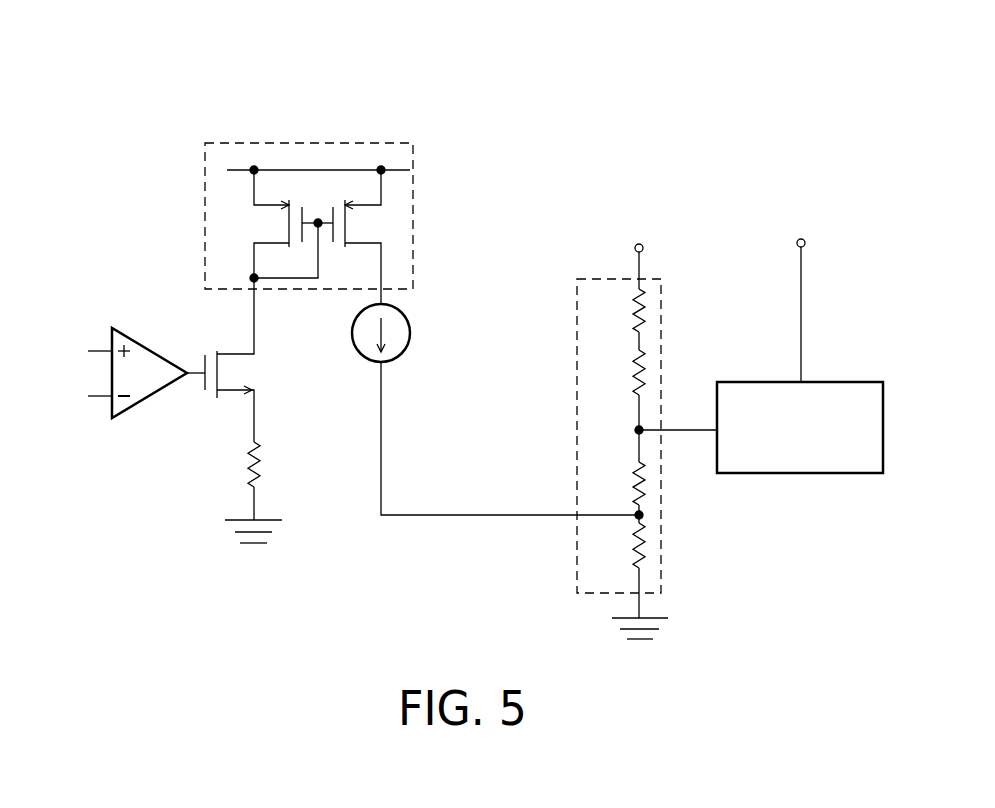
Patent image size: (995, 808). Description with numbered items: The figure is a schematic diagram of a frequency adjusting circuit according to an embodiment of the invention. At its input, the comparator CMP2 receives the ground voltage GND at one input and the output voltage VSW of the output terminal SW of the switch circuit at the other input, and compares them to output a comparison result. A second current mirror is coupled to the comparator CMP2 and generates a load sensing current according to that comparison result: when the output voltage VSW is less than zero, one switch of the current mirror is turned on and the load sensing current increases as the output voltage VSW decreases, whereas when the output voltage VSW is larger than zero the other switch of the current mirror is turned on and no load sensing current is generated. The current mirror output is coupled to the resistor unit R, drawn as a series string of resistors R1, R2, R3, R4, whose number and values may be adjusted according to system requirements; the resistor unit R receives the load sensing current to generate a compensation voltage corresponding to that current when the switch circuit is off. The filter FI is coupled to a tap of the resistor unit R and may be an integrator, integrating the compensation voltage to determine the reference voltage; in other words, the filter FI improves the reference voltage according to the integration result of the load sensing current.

The comparator CMP2 is at (160, 324).
The resistor unit R is at (643, 459).
The resistor R1 is at (618, 310).
The resistor R2 is at (618, 372).
The resistor R3 is at (618, 483).
The resistor R4 is at (618, 545).
The filter FI is at (795, 473).
The output terminal SW is at (632, 250).
The ground voltage GND is at (49, 349).
The output voltage VSW is at (48, 394).